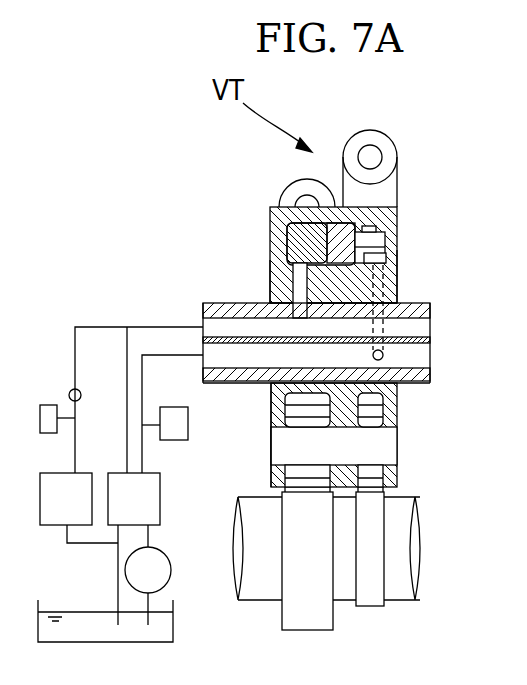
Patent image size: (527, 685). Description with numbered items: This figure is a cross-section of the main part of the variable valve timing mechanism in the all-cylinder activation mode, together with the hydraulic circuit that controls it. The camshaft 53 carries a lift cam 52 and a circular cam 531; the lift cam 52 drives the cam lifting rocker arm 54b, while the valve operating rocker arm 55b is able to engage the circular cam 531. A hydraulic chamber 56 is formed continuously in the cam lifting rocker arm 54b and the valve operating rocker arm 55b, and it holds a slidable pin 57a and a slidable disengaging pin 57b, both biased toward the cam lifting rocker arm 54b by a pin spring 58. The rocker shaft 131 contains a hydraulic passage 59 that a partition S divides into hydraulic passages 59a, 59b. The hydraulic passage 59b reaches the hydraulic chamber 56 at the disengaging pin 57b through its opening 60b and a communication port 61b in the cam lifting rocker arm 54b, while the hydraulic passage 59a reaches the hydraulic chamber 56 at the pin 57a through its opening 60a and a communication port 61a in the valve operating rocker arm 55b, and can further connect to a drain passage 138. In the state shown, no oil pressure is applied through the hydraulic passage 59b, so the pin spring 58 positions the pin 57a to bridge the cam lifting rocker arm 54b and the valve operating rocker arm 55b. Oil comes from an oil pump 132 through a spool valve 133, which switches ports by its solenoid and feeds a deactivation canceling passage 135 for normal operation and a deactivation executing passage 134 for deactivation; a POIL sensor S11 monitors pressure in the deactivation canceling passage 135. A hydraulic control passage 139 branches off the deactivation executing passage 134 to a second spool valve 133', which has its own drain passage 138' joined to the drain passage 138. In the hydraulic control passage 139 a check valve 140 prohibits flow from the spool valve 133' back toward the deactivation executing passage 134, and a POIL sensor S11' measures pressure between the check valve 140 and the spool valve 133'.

The pin 57a is at (365, 192).
The disengaging pin 57b is at (285, 210).
The hydraulic chamber 56 is at (287, 229).
The cam lifting rocker arm 54b is at (269, 212).
The communication port 61b is at (300, 280).
The opening 60b is at (268, 299).
The pin spring 58 is at (380, 242).
The communication port 61a is at (390, 265).
The valve operating rocker arm 55b is at (398, 289).
The hydraulic passage 59 is at (364, 341).
The hydraulic passage 59a is at (413, 352).
The hydraulic passage 59b is at (407, 323).
The opening 60a is at (397, 387).
The partition S is at (383, 340).
The rocker shaft 131 is at (238, 383).
The lift cam 52 is at (282, 618).
The camshaft 53 is at (398, 598).
The circular cam 531 is at (378, 528).
The hydraulic control passage 139 is at (98, 327).
The deactivation executing passage 134 is at (124, 385).
The deactivation canceling passage 135 is at (143, 455).
The POIL sensor S11 is at (167, 397).
The POIL sensor S11' is at (54, 341).
The check valve 140 is at (69, 388).
The spool valve 133 is at (165, 499).
The spool valve 133' is at (60, 529).
The drain passage 138 is at (85, 575).
The drain passage 138' is at (95, 489).
The oil pump 132 is at (172, 556).